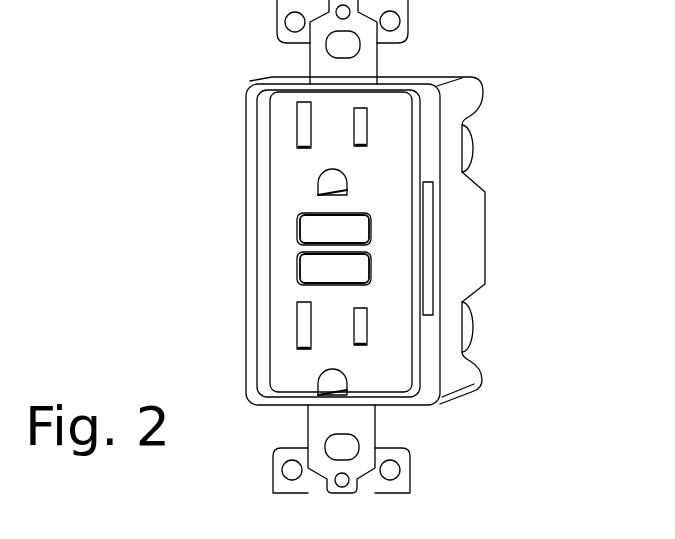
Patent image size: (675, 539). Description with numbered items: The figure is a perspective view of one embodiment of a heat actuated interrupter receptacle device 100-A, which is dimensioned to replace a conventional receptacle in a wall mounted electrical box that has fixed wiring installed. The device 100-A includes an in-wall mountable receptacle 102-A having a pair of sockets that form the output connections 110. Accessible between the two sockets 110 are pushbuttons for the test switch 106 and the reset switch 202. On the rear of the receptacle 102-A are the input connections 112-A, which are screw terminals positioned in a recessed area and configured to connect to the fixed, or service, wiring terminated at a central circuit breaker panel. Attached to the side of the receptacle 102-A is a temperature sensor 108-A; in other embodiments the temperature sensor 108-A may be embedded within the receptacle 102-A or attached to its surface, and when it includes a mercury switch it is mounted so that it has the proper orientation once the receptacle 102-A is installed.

The heat actuated interrupter receptacle device 100-A is at (322, 246).
The in-wall mountable receptacle 102-A is at (428, 242).
The test switch 106 is at (297, 230).
The temperature sensor 108-A is at (433, 222).
The output connections 110 is at (297, 318).
The input connections 112-A is at (470, 150).
The reset switch 202 is at (297, 272).